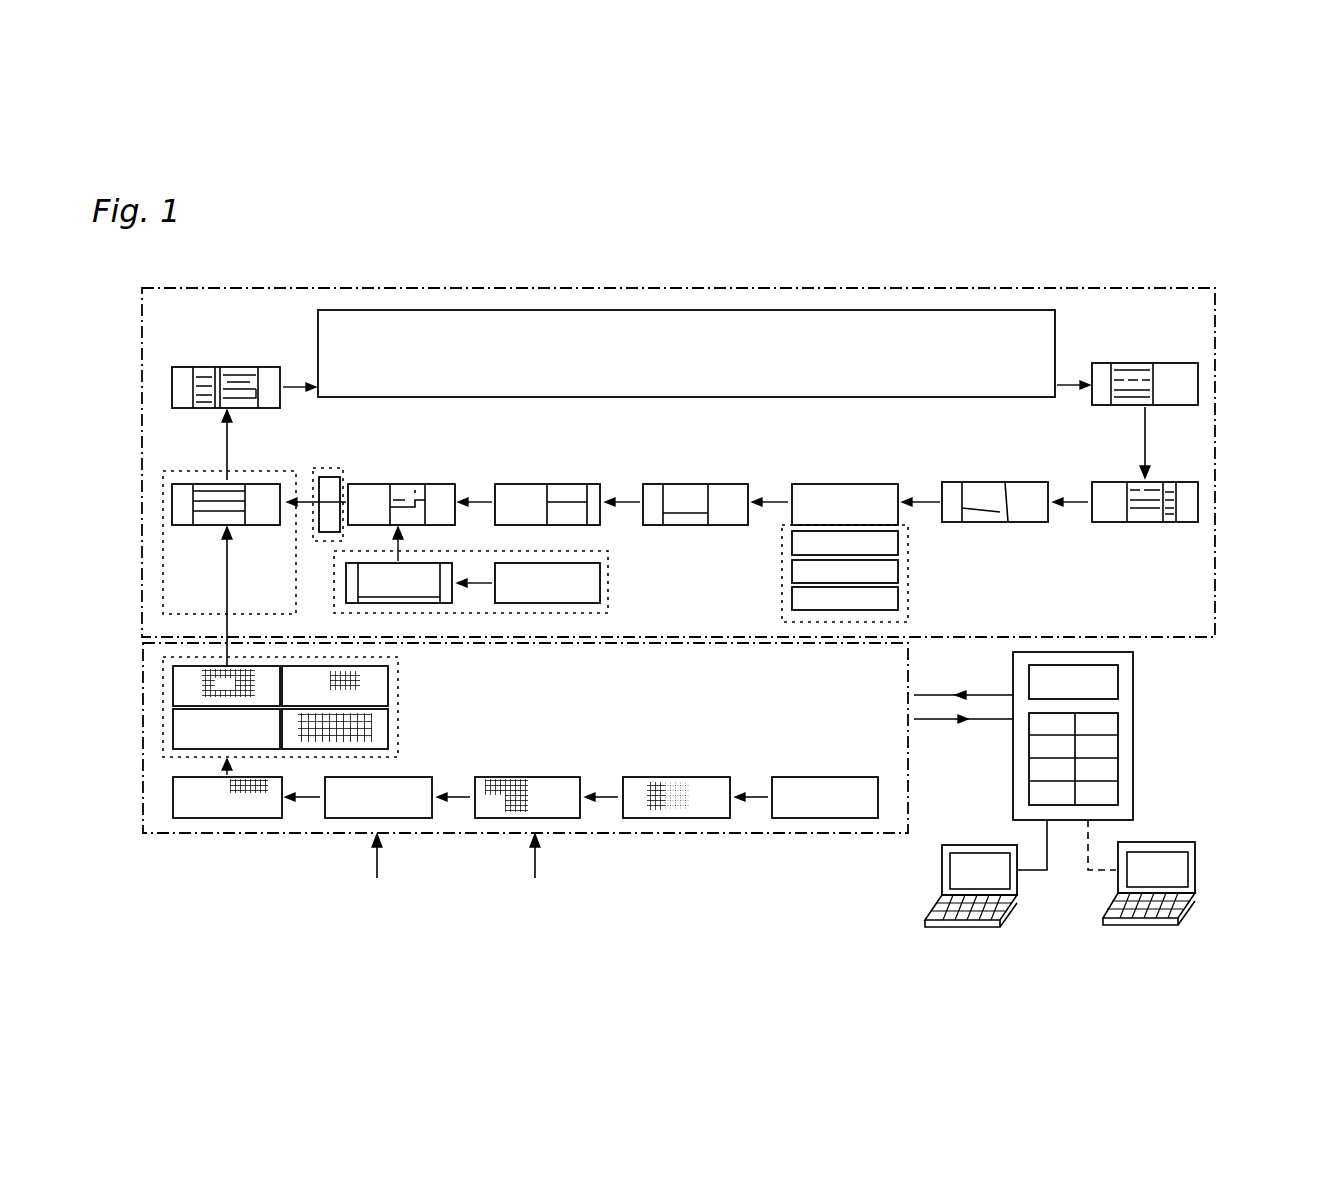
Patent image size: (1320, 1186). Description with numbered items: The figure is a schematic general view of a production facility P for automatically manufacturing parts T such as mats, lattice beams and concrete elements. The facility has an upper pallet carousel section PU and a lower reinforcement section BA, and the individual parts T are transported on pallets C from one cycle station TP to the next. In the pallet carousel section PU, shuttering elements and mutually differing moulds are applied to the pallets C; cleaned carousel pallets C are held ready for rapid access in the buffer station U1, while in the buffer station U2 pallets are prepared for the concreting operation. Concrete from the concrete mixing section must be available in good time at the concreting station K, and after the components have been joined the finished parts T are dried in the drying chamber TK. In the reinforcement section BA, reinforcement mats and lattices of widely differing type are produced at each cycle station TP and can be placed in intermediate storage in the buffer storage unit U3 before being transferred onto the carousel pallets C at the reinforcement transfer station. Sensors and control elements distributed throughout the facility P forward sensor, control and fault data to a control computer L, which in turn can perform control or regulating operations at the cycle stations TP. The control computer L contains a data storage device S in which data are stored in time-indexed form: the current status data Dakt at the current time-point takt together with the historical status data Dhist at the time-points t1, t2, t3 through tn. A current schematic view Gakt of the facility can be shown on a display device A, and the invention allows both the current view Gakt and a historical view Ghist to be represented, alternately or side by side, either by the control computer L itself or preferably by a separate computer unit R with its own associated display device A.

The production facility P is at (1191, 281).
The pallet carousel section PU is at (1216, 478).
The drying chamber TK is at (658, 371).
The part T is at (198, 378).
The concreting station K is at (327, 468).
The pallet C is at (841, 497).
The buffer station U1 is at (908, 580).
The buffer station U2 is at (610, 586).
The buffer storage unit U3 is at (398, 711).
The reinforcement section BA is at (217, 837).
The cycle station TP is at (453, 877).
The control computer L is at (1135, 678).
The display device A is at (1089, 684).
The data storage device S is at (1118, 759).
The current status data Dakt is at (1100, 722).
The historical status data Dhist is at (1105, 740).
The current time-point takt is at (1045, 724).
The time-point t1 is at (1040, 745).
The time-point t2 is at (1043, 760).
The time-point t3 is at (1050, 781).
The time-point tn is at (1052, 797).
The separate computer unit R is at (955, 848).
The current view Gakt is at (1215, 885).
The historical view Ghist is at (1049, 970).